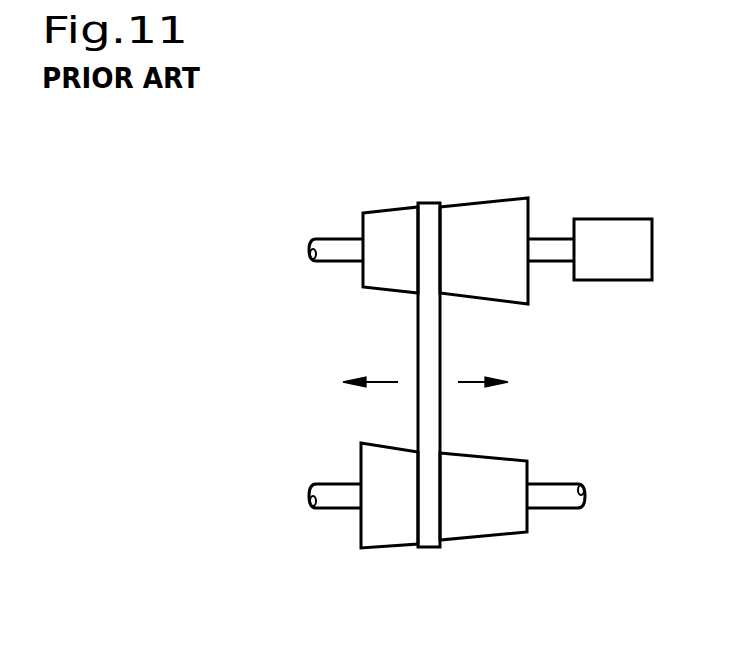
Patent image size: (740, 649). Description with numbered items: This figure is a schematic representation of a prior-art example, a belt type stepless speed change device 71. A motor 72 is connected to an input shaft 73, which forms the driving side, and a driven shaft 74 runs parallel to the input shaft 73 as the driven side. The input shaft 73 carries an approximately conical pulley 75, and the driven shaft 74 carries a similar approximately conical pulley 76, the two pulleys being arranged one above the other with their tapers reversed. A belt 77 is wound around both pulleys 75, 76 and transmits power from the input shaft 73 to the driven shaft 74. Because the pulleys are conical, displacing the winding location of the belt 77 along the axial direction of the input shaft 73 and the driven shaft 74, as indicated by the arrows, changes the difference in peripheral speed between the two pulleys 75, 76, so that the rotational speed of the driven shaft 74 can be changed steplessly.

The belt type stepless speed change device 71 is at (500, 168).
The motor 72 is at (627, 218).
The input shaft 73 is at (550, 246).
The driven shaft 74 is at (562, 491).
The conical pulley 75 is at (383, 267).
The conical pulley 76 is at (389, 523).
The belt 77 is at (430, 426).